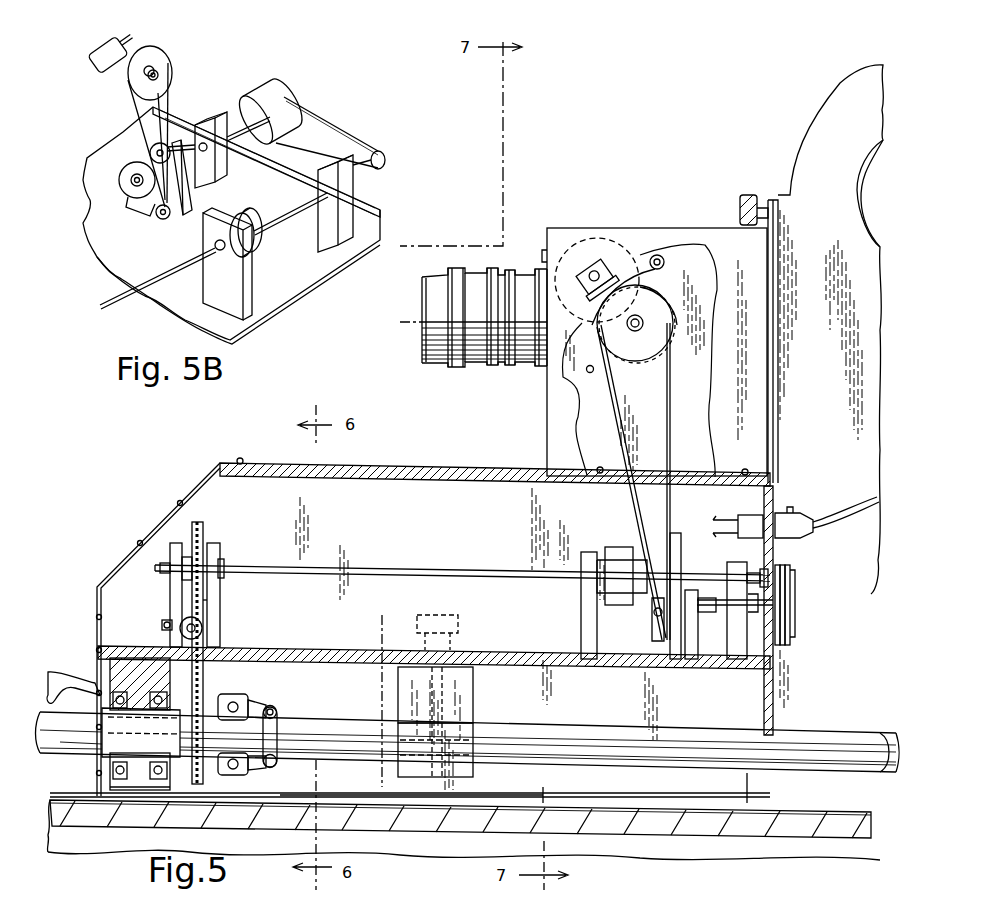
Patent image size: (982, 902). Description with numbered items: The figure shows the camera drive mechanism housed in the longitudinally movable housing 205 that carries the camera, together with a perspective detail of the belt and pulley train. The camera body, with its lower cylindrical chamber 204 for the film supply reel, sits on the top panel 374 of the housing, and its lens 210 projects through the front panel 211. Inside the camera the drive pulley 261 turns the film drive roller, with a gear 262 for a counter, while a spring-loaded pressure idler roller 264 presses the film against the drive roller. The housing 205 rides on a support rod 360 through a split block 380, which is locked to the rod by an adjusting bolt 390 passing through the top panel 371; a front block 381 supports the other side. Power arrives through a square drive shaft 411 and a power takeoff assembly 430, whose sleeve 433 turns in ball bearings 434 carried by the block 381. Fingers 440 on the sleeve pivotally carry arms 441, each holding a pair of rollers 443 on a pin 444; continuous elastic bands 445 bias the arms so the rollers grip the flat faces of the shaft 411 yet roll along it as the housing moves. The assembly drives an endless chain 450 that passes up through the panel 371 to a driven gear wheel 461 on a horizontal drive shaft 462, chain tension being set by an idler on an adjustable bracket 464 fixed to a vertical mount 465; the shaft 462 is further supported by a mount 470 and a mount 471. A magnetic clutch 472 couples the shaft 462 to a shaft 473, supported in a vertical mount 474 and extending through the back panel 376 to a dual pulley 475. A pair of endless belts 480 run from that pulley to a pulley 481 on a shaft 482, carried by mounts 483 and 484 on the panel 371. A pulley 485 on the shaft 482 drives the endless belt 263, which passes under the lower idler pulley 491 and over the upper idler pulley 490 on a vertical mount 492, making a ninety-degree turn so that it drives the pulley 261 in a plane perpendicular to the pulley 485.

In FIG. 5, the lower cylindrical chamber 204 is at (550, 424).
In FIG. 5, the housing 205 is at (587, 370).
In FIG. 5, the lens 210 is at (466, 368).
In FIG. 5, the front panel 211 is at (548, 406).
In FIG. 5B, the drive pulley 261 is at (150, 50).
In FIG. 5, the drive pulley 261 is at (668, 327).
In FIG. 5B, the gear 262 is at (159, 73).
In FIG. 5, the gear 262 is at (616, 281).
In FIG. 5B, the endless belt 263 is at (130, 96).
In FIG. 5, the endless belt 263 is at (674, 406).
In FIG. 5B, the pressure idler roller 264 is at (113, 38).
In FIG. 5, the support rod 360 is at (45, 758).
In FIG. 5B, the top panel 371 is at (262, 330).
In FIG. 5, the top panel 371 is at (268, 646).
In FIG. 5, the top panel 374 is at (497, 470).
In FIG. 5B, the back panel 376 is at (385, 213).
In FIG. 5, the back panel 376 is at (778, 655).
In FIG. 5, the split block 380 is at (475, 702).
In FIG. 5, the front block 381 is at (140, 790).
In FIG. 5, the adjusting bolt 390 is at (458, 640).
In FIG. 5, the square drive shaft 411 is at (848, 748).
In FIG. 5, the power takeoff assembly 430 is at (225, 800).
In FIG. 5, the sleeve 433 is at (177, 790).
In FIG. 5, the ball bearings 434 is at (168, 660).
In FIG. 5, the fingers 440 is at (228, 694).
In FIG. 5, the arm 441 is at (255, 700).
In FIG. 5, the rollers 443 is at (278, 712).
In FIG. 5, the pin 444 is at (274, 706).
In FIG. 5, the elastic bands 445 is at (280, 737).
In FIG. 5, the endless chain 450 is at (222, 610).
In FIG. 5, the driven gear wheel 461 is at (205, 540).
In FIG. 5, the drive shaft 462 is at (240, 565).
In FIG. 5, the adjustable bracket 464 is at (182, 622).
In FIG. 5, the vertical mount 465 is at (173, 545).
In FIG. 5, the mount 470 is at (222, 580).
In FIG. 5B, the mount 471 is at (205, 287).
In FIG. 5, the mount 471 is at (584, 552).
In FIG. 5B, the magnetic clutch 472 is at (250, 212).
In FIG. 5, the magnetic clutch 472 is at (622, 548).
In FIG. 5B, the shaft 473 is at (108, 300).
In FIG. 5, the shaft 473 is at (705, 580).
In FIG. 5B, the vertical mount 474 is at (323, 248).
In FIG. 5, the vertical mount 474 is at (736, 660).
In FIG. 5B, the dual pulley 475 is at (386, 168).
In FIG. 5, the dual pulley 475 is at (790, 568).
In FIG. 5B, the endless belts 480 is at (320, 122).
In FIG. 5, the endless belts 480 is at (800, 635).
In FIG. 5B, the pulley 481 is at (253, 98).
In FIG. 5, the pulley 481 is at (796, 621).
In FIG. 5B, the shaft 482 is at (229, 122).
In FIG. 5, the shaft 482 is at (710, 614).
In FIG. 5B, the vertical mount 483 is at (219, 182).
In FIG. 5B, the mount 484 is at (132, 211).
In FIG. 5, the mount 484 is at (691, 660).
In FIG. 5B, the pulley 485 is at (118, 167).
In FIG. 5B, the idler pulley 490 is at (148, 135).
In FIG. 5B, the lower idler pulley 491 is at (158, 220).
In FIG. 5B, the vertical mount 492 is at (176, 240).